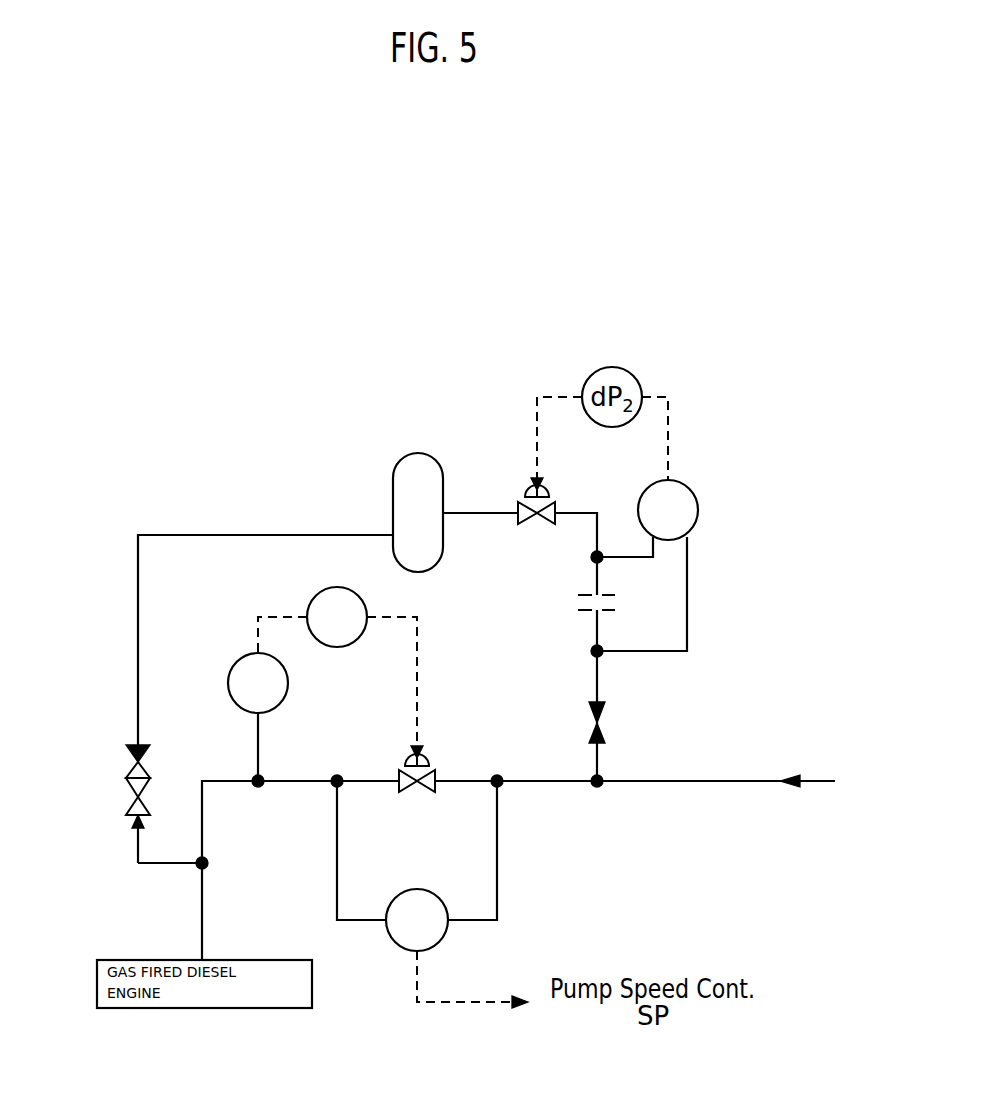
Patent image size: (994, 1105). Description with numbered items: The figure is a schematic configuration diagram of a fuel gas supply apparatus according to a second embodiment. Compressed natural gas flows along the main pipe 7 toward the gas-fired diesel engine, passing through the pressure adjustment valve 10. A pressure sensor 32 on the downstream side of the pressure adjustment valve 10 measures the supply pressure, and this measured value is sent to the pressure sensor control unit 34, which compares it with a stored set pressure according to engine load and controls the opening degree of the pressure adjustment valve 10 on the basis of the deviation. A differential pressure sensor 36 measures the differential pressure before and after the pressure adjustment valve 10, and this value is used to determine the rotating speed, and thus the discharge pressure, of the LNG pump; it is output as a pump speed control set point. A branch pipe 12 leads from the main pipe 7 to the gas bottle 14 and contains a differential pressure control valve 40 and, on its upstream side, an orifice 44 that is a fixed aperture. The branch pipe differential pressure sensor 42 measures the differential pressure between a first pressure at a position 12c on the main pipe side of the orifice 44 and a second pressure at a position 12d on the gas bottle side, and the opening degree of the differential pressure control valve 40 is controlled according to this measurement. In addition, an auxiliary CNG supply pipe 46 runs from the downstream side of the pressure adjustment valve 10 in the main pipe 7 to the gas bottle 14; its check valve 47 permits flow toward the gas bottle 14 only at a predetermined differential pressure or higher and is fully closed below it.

The main pipe 7 is at (724, 781).
The pressure adjustment valve 10 is at (429, 762).
The branch pipe 12 is at (598, 682).
The position on the side of the main pipe 12c is at (591, 651).
The position on the side of the gas bottle 12d is at (591, 557).
The gas bottle 14 is at (418, 453).
The pressure sensor 32 is at (228, 684).
The pressure sensor control unit 34 is at (316, 594).
The differential pressure sensor 36 is at (394, 943).
The differential pressure control valve 40 is at (549, 491).
The branch pipe differential pressure sensor 42 is at (698, 510).
The orifice 44 is at (576, 604).
The auxiliary CNG supply pipe 46 is at (138, 588).
The check valve 47 is at (126, 776).